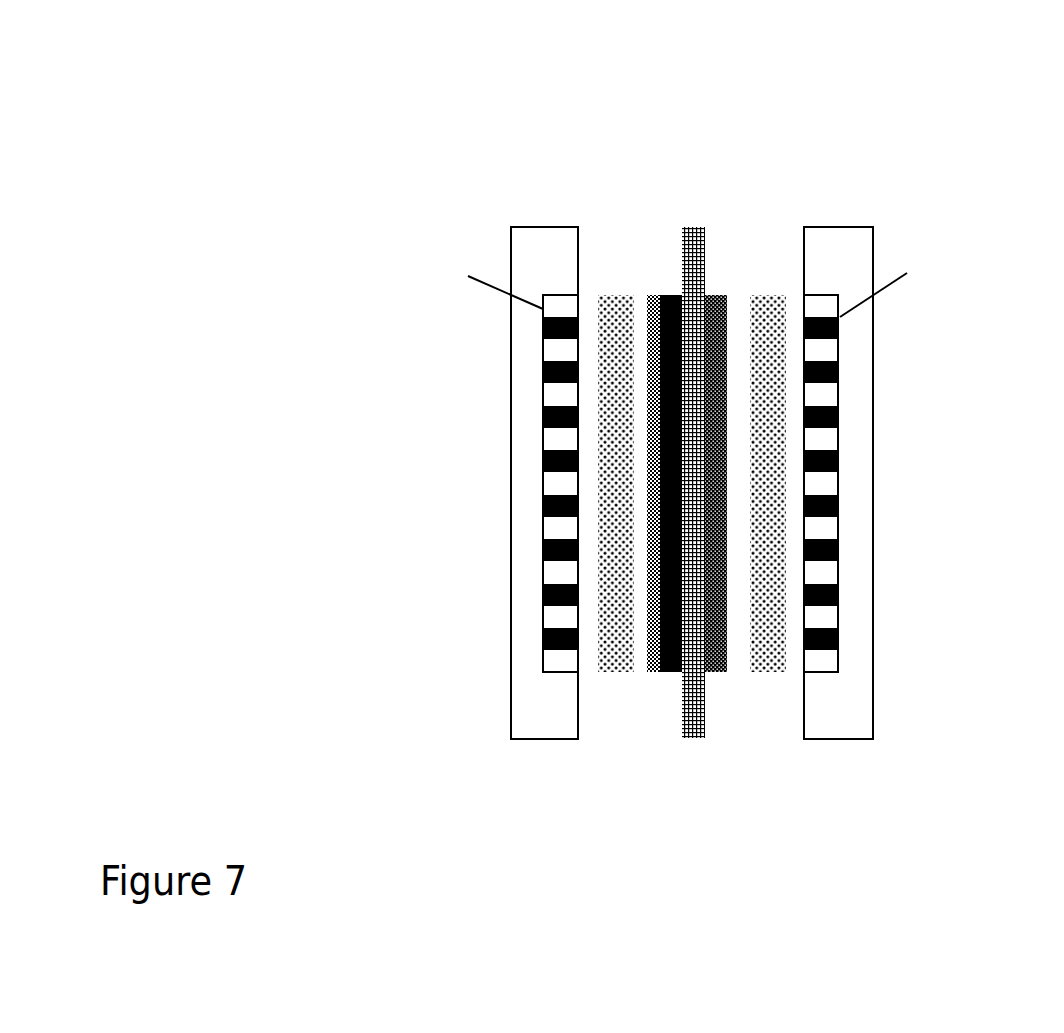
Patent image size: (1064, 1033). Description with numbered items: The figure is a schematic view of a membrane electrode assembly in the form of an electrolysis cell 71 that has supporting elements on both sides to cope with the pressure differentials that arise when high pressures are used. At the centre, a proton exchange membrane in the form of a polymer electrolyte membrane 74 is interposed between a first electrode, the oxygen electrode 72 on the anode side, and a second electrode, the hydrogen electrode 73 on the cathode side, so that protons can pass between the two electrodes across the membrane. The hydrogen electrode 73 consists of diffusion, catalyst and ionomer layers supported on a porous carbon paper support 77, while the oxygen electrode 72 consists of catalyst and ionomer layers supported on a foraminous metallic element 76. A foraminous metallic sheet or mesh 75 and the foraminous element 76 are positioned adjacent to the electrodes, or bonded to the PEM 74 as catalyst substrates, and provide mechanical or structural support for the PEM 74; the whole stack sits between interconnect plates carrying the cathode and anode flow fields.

The electrolysis cell 71 is at (641, 424).
The oxygen electrode 72 is at (715, 673).
The hydrogen electrode 73 is at (659, 672).
The polymer electrolyte membrane 74 is at (690, 738).
The foraminous metallic sheet or mesh 75 is at (615, 297).
The foraminous metallic element 76 is at (843, 390).
The carbon paper support 77 is at (652, 297).